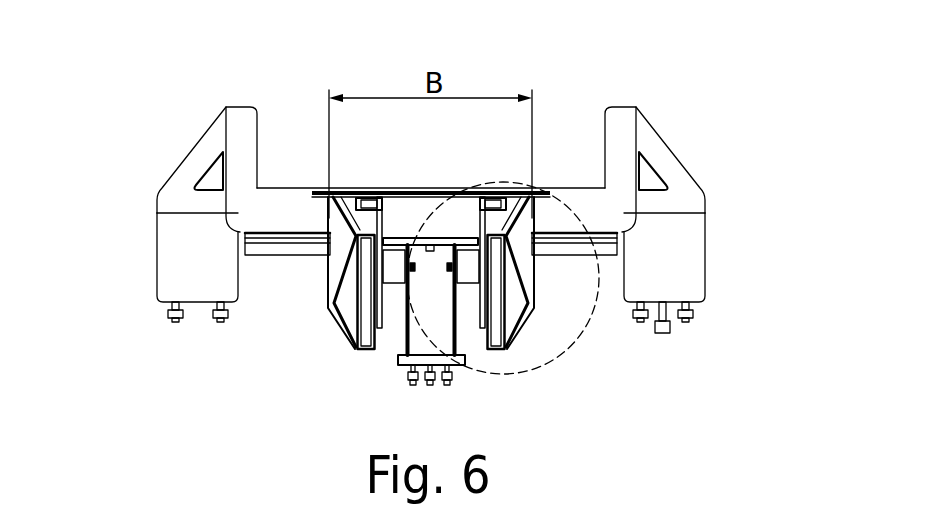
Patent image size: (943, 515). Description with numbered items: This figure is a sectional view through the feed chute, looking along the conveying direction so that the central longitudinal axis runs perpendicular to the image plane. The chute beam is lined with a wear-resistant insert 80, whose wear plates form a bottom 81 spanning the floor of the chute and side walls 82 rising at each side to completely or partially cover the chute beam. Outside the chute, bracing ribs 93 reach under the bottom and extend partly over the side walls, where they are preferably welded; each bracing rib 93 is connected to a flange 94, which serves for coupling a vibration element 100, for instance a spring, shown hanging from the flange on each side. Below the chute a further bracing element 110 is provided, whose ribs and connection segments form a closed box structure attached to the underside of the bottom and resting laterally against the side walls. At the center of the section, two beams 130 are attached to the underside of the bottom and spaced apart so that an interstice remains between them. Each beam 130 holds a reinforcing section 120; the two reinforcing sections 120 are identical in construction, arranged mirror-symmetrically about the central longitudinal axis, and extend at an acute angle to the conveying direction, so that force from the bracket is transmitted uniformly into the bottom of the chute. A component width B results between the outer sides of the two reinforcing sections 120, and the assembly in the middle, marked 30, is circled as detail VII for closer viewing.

The coupling device 30 is at (573, 210).
The wear-resistant insert 80 is at (571, 163).
The bottom 81 is at (377, 190).
The side walls 82 is at (257, 127).
The bracing ribs 93 is at (213, 135).
The flange 94 is at (185, 212).
The vibration element 100 is at (177, 242).
The bracing element 110 is at (286, 217).
The reinforcing sections 120 is at (340, 328).
The beams 130 is at (382, 330).
The detail view circle VII is at (567, 350).